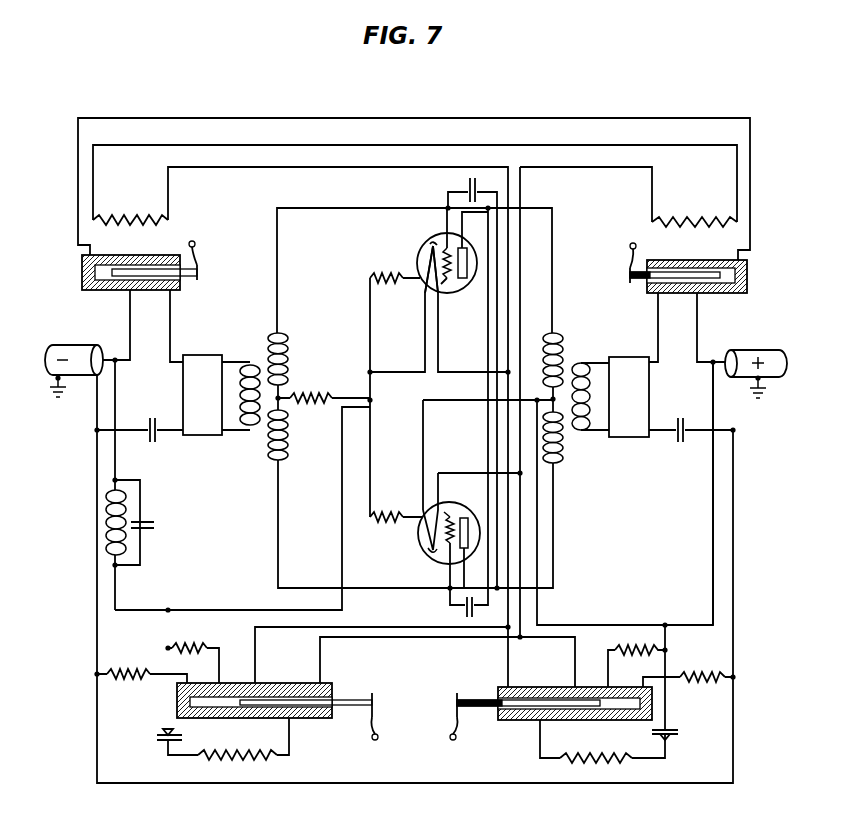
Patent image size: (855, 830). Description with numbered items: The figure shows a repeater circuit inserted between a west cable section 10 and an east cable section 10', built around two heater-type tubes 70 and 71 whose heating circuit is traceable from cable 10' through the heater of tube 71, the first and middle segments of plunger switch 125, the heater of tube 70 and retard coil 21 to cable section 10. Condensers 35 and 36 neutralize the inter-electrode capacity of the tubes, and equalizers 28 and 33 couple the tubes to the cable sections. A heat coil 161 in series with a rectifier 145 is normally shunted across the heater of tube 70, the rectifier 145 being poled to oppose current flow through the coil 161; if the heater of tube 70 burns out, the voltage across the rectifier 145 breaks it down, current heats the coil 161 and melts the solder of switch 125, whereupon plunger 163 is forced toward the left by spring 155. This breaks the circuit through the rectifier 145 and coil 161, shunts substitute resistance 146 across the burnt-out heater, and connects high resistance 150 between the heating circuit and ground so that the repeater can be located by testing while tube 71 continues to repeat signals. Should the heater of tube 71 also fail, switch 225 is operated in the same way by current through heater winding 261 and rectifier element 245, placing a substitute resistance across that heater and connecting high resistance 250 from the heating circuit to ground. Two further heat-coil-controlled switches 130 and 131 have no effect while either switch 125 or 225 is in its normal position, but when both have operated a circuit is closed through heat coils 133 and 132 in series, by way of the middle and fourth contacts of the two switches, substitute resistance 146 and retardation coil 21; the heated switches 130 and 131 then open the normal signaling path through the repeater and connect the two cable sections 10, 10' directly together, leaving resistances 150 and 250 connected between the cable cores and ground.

The heat coil 132 is at (131, 216).
The heat-coil-controlled switch 130 is at (138, 250).
The condenser 35 is at (466, 185).
The heater-type tube 70 is at (422, 258).
The heat coil 133 is at (694, 219).
The heat-coil-controlled switch 131 is at (698, 258).
The west cable section 10 is at (74, 360).
The equalizer 28 is at (206, 355).
The equalizer 33 is at (630, 357).
The cable section 10' is at (756, 362).
The retard coil 21 is at (155, 522).
The heater-type tube 71 is at (468, 512).
The condenser 36 is at (465, 613).
The substitute resistance 146 is at (216, 636).
The high resistance 150 is at (146, 660).
The plunger switch 125 is at (279, 683).
The plunger 163 is at (355, 697).
The spring 155 is at (378, 720).
The rectifier 145 is at (163, 746).
The heat coil 161 is at (261, 745).
The switch 225 is at (556, 677).
The high resistance 250 is at (713, 665).
The rectifier element 245 is at (680, 734).
The heater winding 261 is at (608, 756).